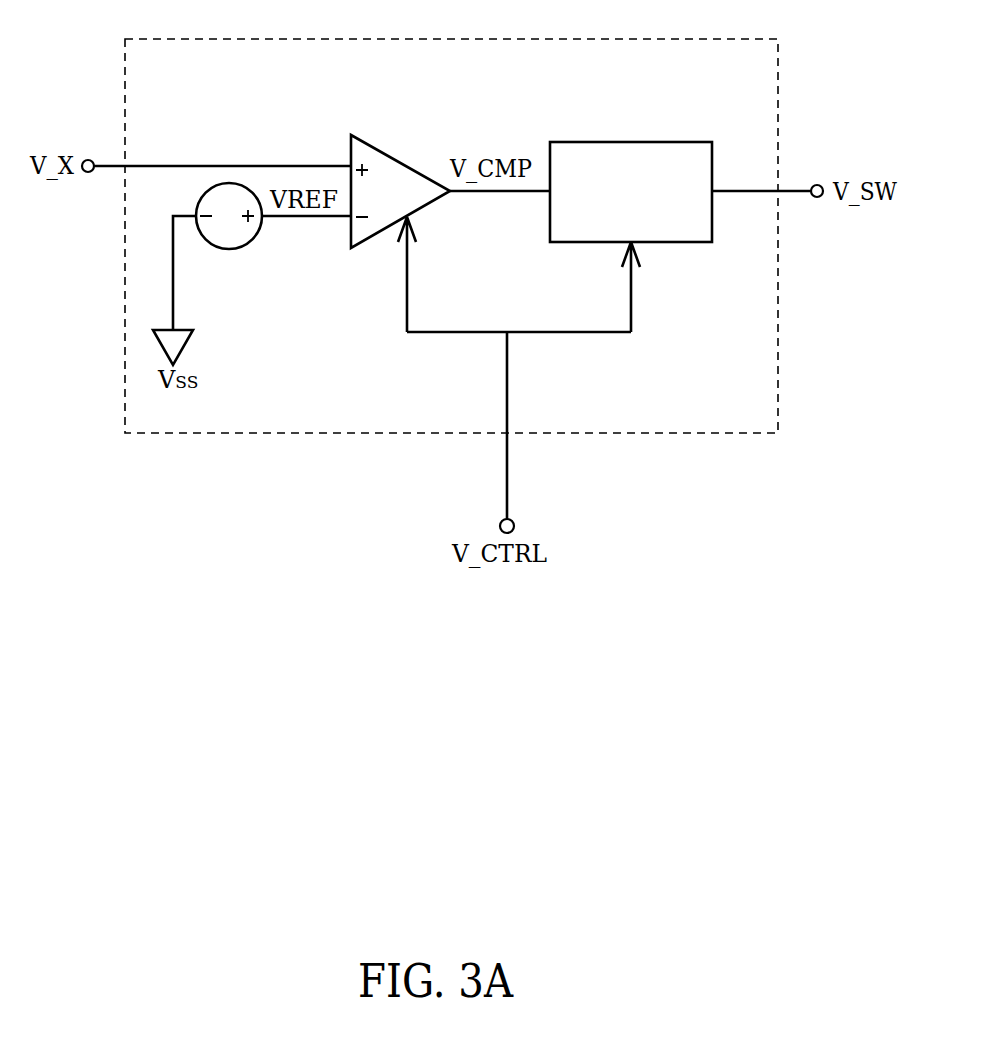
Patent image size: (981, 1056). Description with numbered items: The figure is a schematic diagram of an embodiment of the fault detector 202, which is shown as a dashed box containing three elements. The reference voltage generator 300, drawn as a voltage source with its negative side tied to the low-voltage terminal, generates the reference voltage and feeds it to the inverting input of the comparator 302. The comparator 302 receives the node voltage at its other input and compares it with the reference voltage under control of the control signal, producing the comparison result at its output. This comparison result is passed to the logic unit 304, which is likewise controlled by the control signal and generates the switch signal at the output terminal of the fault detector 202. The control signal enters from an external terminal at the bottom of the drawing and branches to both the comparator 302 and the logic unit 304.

The fault detector 202 is at (737, 39).
The reference voltage generator 300 is at (229, 249).
The comparator 302 is at (391, 152).
The logic unit 304 is at (681, 142).